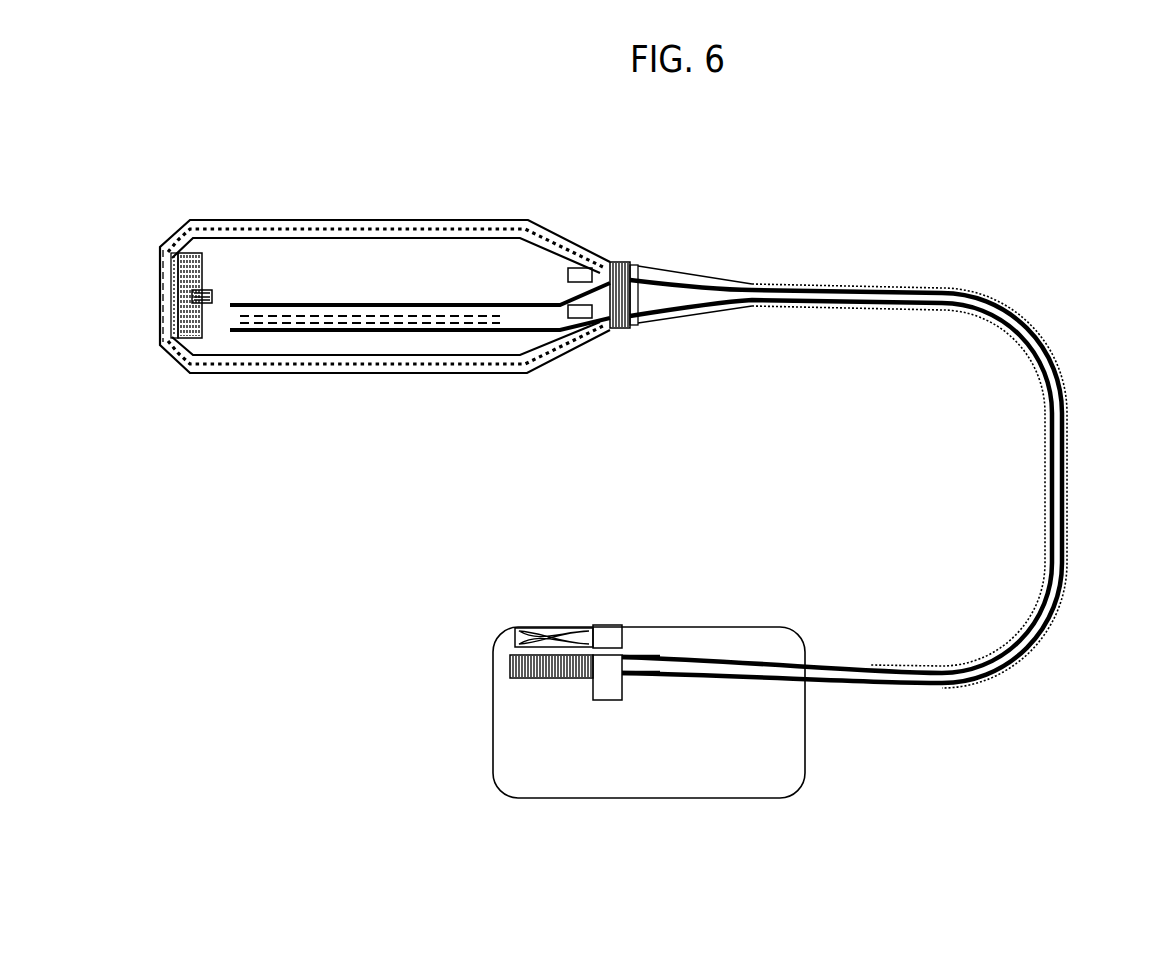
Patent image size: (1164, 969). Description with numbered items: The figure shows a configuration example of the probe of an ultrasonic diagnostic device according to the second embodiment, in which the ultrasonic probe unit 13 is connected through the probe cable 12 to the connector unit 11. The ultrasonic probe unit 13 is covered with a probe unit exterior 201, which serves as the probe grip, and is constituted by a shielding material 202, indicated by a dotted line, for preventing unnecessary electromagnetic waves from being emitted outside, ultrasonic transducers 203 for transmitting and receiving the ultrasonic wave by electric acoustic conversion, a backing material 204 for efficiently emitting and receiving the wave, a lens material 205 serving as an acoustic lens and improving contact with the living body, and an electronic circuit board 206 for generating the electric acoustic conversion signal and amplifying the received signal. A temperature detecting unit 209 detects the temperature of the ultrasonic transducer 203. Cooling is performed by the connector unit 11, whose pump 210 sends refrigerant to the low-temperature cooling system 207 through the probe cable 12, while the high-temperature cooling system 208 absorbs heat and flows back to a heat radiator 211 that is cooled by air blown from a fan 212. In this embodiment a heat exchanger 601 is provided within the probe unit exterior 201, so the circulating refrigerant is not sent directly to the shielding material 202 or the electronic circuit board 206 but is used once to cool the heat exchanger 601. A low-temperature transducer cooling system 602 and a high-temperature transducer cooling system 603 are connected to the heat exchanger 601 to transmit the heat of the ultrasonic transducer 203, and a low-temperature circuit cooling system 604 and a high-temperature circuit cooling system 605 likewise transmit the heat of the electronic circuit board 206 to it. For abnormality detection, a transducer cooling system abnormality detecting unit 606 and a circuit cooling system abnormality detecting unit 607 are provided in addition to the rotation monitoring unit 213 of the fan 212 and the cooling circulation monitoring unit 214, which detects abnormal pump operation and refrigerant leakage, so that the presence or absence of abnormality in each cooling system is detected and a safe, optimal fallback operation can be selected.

The connector unit 11 is at (651, 849).
The probe cable 12 is at (1146, 487).
The ultrasonic probe unit 13 is at (371, 144).
The probe unit exterior 201 is at (452, 220).
The shielding material 202 is at (395, 232).
The ultrasonic transducers 203 is at (175, 296).
The backing material 204 is at (190, 288).
The lens material 205 is at (162, 330).
The electronic circuit board 206 is at (347, 322).
The low-temperature cooling system 207 is at (678, 270).
The high-temperature cooling system 208 is at (693, 315).
The temperature detecting unit 209 is at (212, 297).
The pump 210 is at (610, 660).
The heat radiator 211 is at (515, 665).
The fan 212 is at (515, 637).
The rotation monitoring unit 213 is at (608, 638).
The cooling circulation monitoring unit 214 is at (608, 688).
The heat exchanger 601 is at (630, 262).
The low-temperature transducer cooling system 602 is at (538, 232).
The high-temperature transducer cooling system 603 is at (447, 358).
The low-temperature circuit cooling system 604 is at (500, 315).
The high-temperature circuit cooling system 605 is at (415, 332).
The transducer cooling system abnormality detecting unit 606 is at (585, 270).
The circuit cooling system abnormality detecting unit 607 is at (575, 318).